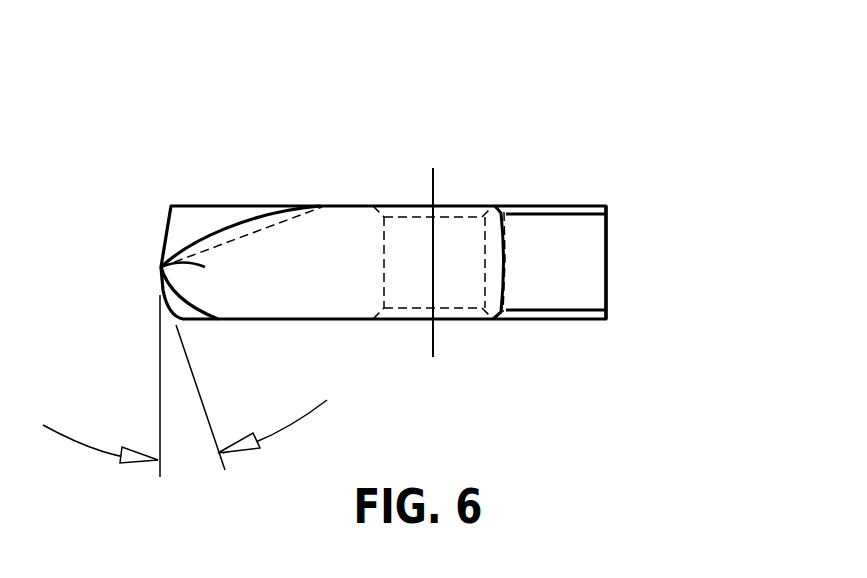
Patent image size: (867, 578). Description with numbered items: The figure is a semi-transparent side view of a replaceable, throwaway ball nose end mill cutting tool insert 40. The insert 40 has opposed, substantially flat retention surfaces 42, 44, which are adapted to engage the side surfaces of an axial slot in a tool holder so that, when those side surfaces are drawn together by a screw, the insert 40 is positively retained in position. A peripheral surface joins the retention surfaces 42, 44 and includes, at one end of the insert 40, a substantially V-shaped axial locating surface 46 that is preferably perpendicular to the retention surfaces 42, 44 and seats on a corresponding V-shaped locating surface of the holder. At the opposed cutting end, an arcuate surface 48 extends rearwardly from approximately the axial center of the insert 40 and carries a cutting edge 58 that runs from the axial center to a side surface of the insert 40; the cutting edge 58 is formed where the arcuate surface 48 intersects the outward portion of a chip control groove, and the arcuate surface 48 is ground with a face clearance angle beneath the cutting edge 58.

The cutting tool insert 40 is at (410, 88).
The retention surface 42 is at (552, 204).
The retention surface 44 is at (543, 322).
The V-shaped axial locating surface 46 is at (582, 271).
The arcuate surface 48 is at (161, 267).
The cutting edge 58 is at (220, 230).